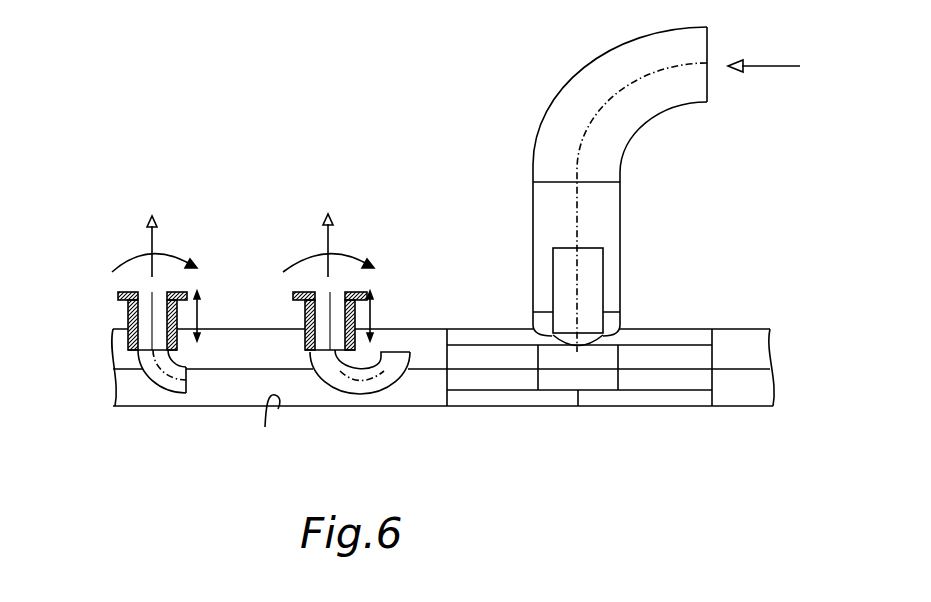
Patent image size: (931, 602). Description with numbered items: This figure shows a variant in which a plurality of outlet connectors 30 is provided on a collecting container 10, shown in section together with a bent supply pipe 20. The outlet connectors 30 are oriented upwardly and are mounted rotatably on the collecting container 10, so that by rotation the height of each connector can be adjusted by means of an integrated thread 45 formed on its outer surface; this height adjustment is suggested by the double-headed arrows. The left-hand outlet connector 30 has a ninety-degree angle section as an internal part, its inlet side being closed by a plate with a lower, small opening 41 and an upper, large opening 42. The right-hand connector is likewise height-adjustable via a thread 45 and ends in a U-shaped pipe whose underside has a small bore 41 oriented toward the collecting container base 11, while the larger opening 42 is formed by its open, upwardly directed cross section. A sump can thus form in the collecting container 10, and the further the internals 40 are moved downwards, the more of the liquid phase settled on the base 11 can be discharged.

The collecting container 10 is at (440, 328).
The collecting container base 11 is at (268, 429).
The supply pipe 20 is at (560, 98).
The outlet connector 30 is at (158, 293).
The internals 40 is at (143, 380).
The small opening 41 is at (187, 368).
The large opening 42 is at (420, 310).
The thread 45 is at (130, 305).